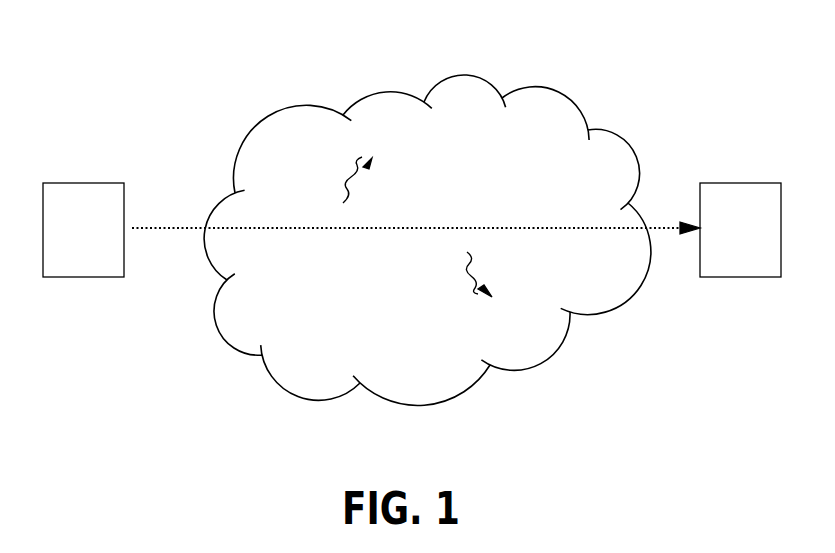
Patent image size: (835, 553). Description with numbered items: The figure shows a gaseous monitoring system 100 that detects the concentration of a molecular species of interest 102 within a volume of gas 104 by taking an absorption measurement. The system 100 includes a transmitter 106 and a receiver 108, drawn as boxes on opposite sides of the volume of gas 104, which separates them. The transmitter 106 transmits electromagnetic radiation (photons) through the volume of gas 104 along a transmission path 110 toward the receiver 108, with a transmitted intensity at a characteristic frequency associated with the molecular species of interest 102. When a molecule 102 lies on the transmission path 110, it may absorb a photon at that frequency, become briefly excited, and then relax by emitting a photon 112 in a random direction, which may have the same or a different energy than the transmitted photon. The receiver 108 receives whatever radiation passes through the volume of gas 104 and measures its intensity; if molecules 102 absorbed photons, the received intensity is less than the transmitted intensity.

The gaseous monitoring system 100 is at (98, 70).
The molecular species of interest 102 is at (313, 172).
The volume of gas 104 is at (473, 73).
The transmitter 106 is at (82, 183).
The receiver 108 is at (742, 183).
The transmission path 110 is at (653, 228).
The emitted photon 112 is at (396, 176).